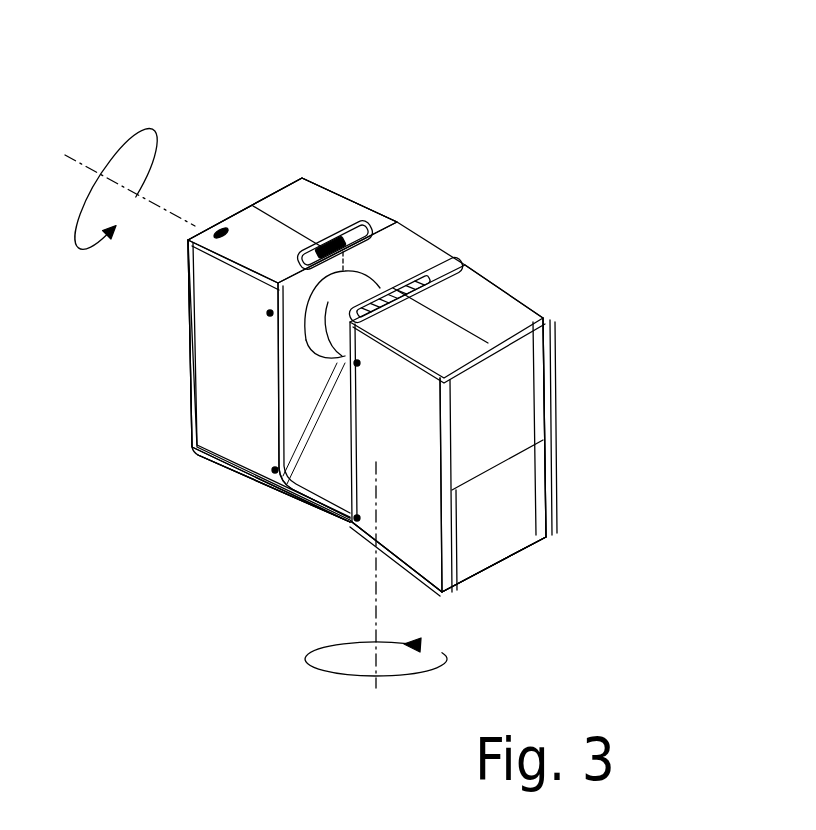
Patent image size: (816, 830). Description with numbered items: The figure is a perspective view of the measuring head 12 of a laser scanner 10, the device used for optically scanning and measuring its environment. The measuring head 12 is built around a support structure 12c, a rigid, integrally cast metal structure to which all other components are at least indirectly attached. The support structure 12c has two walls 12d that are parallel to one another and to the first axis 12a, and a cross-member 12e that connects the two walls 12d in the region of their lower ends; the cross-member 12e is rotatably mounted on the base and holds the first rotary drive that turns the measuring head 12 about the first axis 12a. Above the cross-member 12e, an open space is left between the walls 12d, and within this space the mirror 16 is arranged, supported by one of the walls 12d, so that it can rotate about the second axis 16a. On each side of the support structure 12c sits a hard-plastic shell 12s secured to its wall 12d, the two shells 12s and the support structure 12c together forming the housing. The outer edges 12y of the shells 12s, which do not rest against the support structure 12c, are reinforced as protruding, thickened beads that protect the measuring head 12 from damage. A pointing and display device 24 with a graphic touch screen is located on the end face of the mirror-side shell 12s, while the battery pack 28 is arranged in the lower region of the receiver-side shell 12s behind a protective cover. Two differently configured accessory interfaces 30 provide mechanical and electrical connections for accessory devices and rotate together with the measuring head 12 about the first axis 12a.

The laser scanner 10 is at (618, 112).
The measuring head 12 is at (176, 387).
The shell 12s is at (217, 314).
The outer edges 12y is at (195, 428).
The walls 12d is at (290, 428).
The cross-member 12e is at (335, 476).
The support structure 12c is at (328, 628).
The first axis 12a is at (377, 678).
The mirror 16 is at (358, 272).
The second axis 16a is at (165, 212).
The pointing and display device 24 is at (273, 182).
The battery pack 28 is at (547, 520).
The accessory interfaces 30 is at (360, 228).